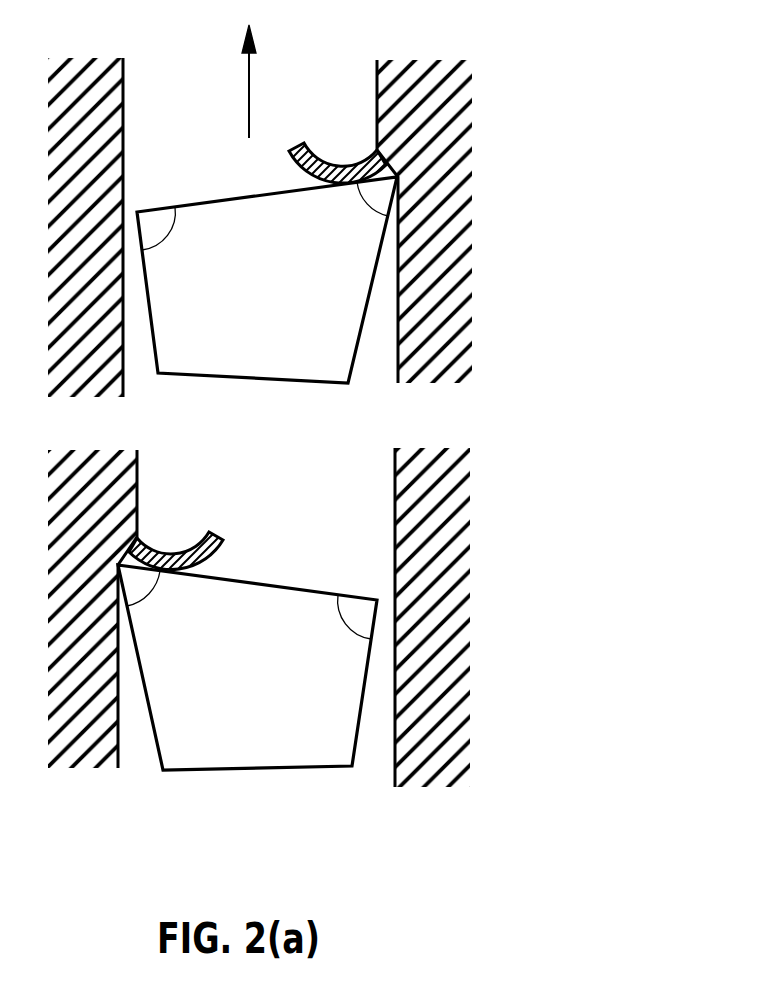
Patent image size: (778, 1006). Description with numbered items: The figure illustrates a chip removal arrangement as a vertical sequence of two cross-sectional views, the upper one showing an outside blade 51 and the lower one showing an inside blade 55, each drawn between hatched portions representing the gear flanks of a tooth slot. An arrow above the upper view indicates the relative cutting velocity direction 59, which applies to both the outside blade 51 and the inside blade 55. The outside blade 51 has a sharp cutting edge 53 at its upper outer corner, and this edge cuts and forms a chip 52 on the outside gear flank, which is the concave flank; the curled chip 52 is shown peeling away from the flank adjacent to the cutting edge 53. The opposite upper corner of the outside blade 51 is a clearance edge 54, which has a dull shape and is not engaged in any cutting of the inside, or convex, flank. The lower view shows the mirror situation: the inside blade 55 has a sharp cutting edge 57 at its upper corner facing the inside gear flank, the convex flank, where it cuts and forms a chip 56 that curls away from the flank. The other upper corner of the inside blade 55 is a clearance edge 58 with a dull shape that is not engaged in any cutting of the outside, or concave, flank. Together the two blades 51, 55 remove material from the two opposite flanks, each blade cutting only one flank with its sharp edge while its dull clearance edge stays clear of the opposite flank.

The outside blade 51 is at (307, 358).
The chip 52 is at (333, 162).
The sharp cutting edge 53 is at (367, 210).
The clearance edge 54 is at (162, 240).
The inside blade 55 is at (305, 753).
The chip 56 is at (183, 547).
The sharp cutting edge 57 is at (143, 597).
The clearance edge 58 is at (355, 635).
The relative cutting velocity direction 59 is at (229, 81).